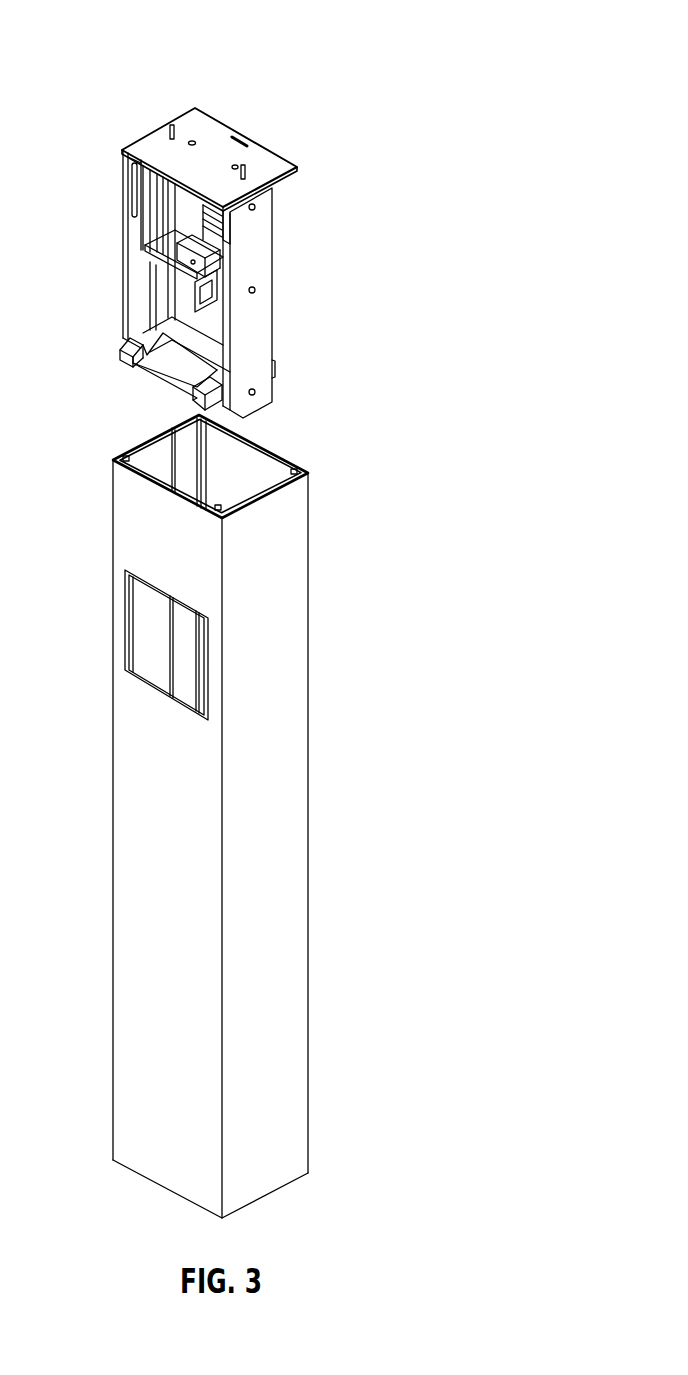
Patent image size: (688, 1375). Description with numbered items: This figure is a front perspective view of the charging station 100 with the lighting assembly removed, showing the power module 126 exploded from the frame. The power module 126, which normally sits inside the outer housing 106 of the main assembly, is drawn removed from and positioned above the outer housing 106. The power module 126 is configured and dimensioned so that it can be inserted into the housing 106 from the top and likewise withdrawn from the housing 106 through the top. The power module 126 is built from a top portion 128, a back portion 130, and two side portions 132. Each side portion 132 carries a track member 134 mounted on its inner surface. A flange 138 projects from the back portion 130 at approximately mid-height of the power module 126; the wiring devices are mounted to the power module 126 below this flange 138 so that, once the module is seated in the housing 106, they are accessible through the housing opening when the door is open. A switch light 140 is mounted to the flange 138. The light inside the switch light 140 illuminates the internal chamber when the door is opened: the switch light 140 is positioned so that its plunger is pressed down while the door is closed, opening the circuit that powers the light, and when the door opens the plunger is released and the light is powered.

The charging station 100 is at (522, 46).
The outer housing 106 is at (298, 853).
The power module 126 is at (243, 254).
The top portion 128 is at (210, 123).
The back portion 130 is at (280, 207).
The side portions 132 is at (253, 267).
The track member 134 is at (140, 300).
The flange 138 is at (148, 260).
The switch light 140 is at (119, 353).